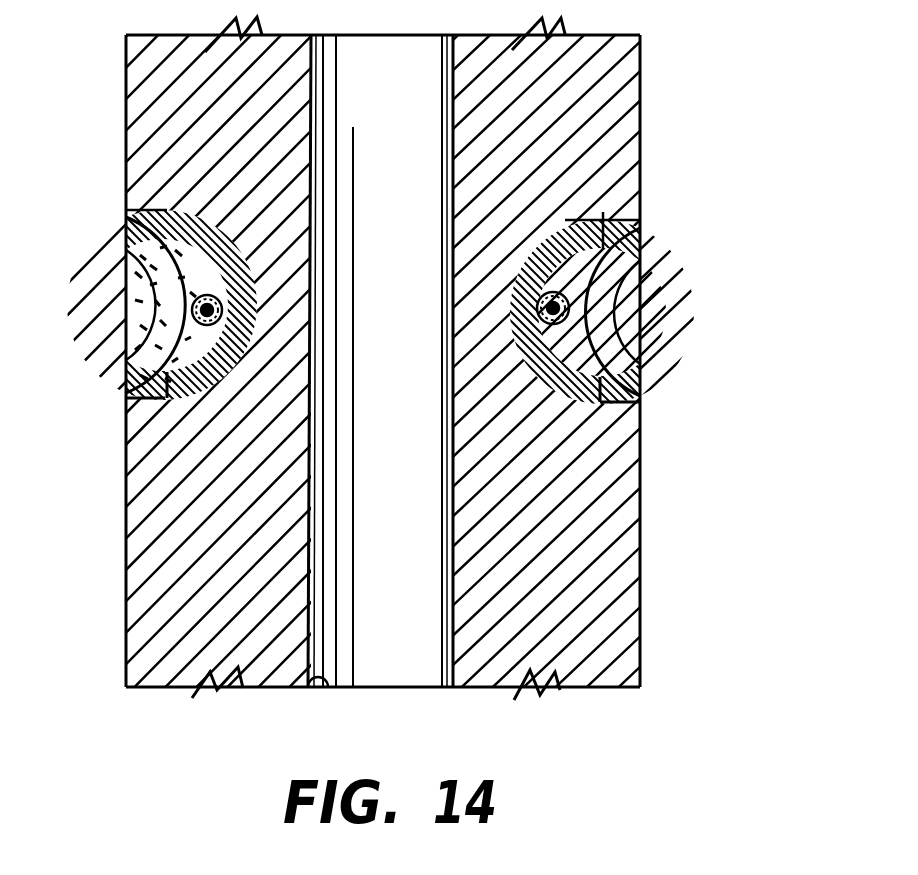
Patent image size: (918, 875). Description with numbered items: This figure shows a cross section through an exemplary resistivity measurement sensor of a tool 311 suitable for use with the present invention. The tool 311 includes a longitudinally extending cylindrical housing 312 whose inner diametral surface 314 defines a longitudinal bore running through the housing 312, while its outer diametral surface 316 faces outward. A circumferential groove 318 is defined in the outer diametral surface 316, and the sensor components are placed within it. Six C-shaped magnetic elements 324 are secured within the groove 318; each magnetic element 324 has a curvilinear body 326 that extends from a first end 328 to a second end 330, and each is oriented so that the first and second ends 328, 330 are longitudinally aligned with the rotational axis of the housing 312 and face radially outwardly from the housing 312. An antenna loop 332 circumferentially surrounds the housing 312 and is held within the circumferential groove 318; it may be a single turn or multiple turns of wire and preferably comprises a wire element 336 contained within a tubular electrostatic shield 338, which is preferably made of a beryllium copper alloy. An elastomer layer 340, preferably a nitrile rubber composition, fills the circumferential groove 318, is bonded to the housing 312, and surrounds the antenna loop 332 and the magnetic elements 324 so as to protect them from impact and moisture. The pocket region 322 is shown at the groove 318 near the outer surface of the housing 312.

The tool 311 is at (662, 556).
The housing 312 is at (623, 73).
The inner diametral surface 314 is at (322, 690).
The outer diametral surface 316 is at (643, 111).
The circumferential groove 318 is at (572, 262).
The pocket top surface 322 is at (603, 230).
The magnetic element 324 is at (165, 210).
The curvilinear body 326 is at (190, 216).
The first end 328 is at (172, 262).
The second end 330 is at (130, 412).
The antenna loop 332 is at (190, 311).
The wire element 336 is at (195, 297).
The electrostatic shield 338 is at (142, 350).
The elastomer layer 340 is at (626, 337).